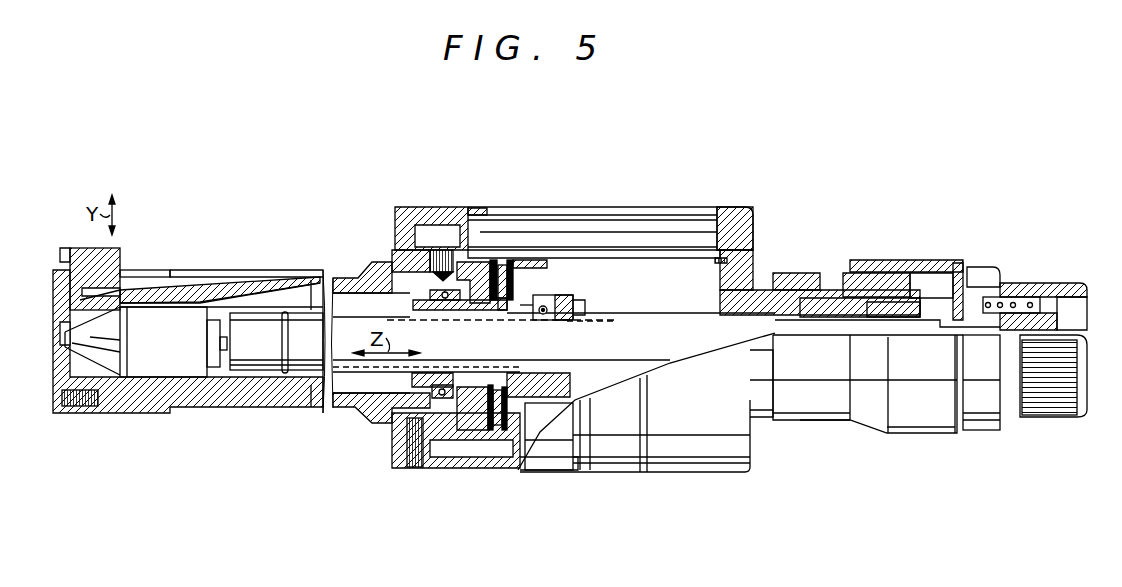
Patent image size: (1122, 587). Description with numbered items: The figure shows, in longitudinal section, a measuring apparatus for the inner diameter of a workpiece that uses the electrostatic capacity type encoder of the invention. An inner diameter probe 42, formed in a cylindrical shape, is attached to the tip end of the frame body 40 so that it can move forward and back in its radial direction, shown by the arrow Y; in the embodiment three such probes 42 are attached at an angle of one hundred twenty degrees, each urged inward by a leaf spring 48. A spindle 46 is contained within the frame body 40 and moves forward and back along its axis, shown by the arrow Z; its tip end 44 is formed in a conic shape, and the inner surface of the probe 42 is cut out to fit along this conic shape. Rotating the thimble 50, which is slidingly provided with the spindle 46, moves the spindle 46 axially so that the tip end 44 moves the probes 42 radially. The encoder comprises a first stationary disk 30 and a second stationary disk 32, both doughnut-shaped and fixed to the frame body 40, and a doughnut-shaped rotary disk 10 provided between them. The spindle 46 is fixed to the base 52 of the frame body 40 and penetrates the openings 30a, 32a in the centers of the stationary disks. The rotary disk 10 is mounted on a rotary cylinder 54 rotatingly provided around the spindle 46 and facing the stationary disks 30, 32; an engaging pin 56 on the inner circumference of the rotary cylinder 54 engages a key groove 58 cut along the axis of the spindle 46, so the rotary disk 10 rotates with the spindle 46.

The rotary disk 10 is at (505, 270).
The first stationary disk 30 is at (493, 260).
The opening 30a is at (495, 303).
The second stationary disk 32 is at (513, 260).
The opening 32a is at (520, 310).
The frame body 40 is at (340, 397).
The inner diameter probe 42 is at (120, 262).
The tip end 44 is at (143, 365).
The spindle 46 is at (290, 350).
The leaf spring 48 is at (255, 278).
The thimble 50 is at (900, 263).
The base 52 is at (500, 432).
The rotary cylinder 54 is at (540, 320).
The engaging pin 56 is at (578, 310).
The key groove 58 is at (570, 322).